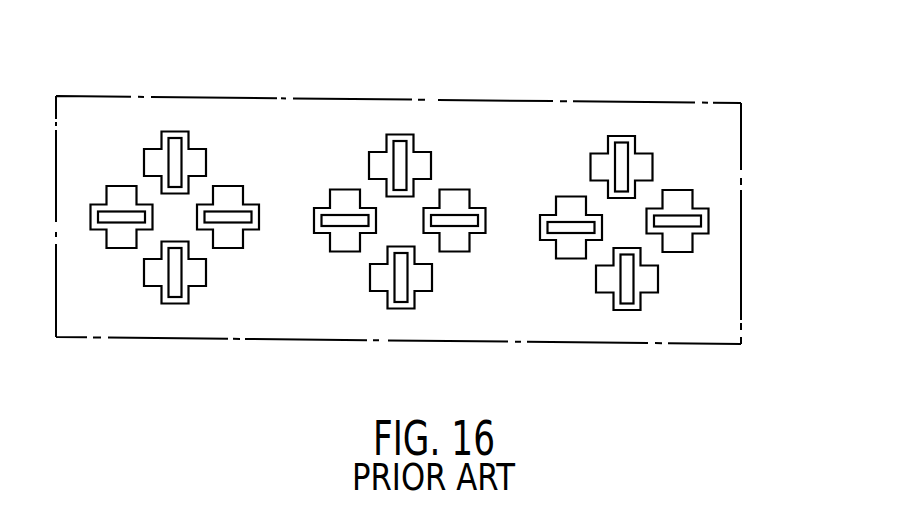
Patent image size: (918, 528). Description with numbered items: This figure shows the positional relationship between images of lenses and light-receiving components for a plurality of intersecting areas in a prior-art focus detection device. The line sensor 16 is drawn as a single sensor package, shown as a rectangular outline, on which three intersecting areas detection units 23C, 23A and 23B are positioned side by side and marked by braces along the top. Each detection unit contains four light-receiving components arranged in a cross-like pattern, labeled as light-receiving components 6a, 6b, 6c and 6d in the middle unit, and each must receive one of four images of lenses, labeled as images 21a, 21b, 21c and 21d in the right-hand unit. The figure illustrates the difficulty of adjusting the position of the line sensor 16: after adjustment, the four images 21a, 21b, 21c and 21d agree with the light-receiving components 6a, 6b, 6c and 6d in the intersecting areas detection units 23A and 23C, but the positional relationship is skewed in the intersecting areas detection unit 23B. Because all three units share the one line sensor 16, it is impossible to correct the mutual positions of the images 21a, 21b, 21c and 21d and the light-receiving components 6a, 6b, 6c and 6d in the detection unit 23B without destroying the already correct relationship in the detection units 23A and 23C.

The line sensor 16 is at (137, 338).
The intersecting areas detection unit 23C is at (260, 85).
The intersecting areas detection unit 23A is at (400, 206).
The intersecting areas detection unit 23B is at (649, 207).
The light-receiving component 6a is at (398, 155).
The light-receiving component 6b is at (403, 288).
The light-receiving component 6c is at (350, 223).
The light-receiving component 6d is at (458, 223).
The image 21a is at (652, 162).
The image 21b is at (657, 288).
The image 21c is at (563, 255).
The image 21d is at (700, 218).